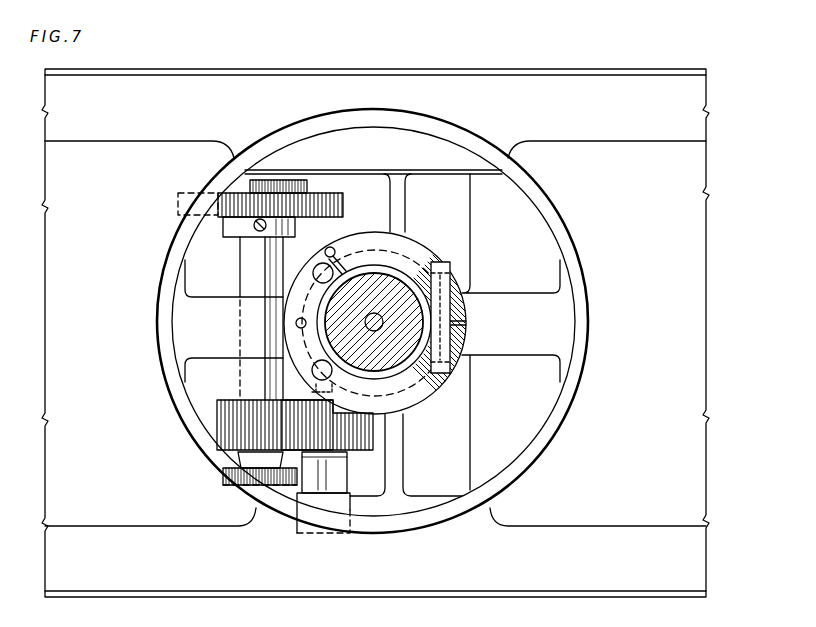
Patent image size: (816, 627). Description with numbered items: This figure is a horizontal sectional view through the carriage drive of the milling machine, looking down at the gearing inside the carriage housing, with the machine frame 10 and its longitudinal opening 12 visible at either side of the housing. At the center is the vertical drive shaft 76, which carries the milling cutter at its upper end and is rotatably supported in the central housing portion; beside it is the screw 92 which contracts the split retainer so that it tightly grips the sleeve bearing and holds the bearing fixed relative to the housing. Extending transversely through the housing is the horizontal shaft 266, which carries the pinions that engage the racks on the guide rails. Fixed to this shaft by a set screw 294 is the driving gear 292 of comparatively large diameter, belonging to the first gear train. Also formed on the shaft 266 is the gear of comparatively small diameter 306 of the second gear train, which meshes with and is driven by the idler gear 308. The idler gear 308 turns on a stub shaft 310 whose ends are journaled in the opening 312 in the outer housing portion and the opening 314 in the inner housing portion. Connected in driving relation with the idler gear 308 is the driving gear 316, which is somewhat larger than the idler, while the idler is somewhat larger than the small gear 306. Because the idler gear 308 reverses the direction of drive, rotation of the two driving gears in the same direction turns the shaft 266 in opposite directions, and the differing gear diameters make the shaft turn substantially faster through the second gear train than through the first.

The frame 10 is at (612, 67).
The longitudinal opening 12 is at (104, 263).
The drive shaft 76 is at (330, 322).
The screw 92 is at (452, 262).
The horizontal shaft 266 is at (247, 362).
The driving gear 292 is at (343, 205).
The set screw 294 is at (262, 232).
The gear of comparatively small diameter 306 is at (245, 405).
The idler gear 308 is at (375, 432).
The stub shaft 310 is at (333, 475).
The opening 312 is at (300, 517).
The opening 314 is at (335, 393).
The driving gear 316 is at (230, 430).